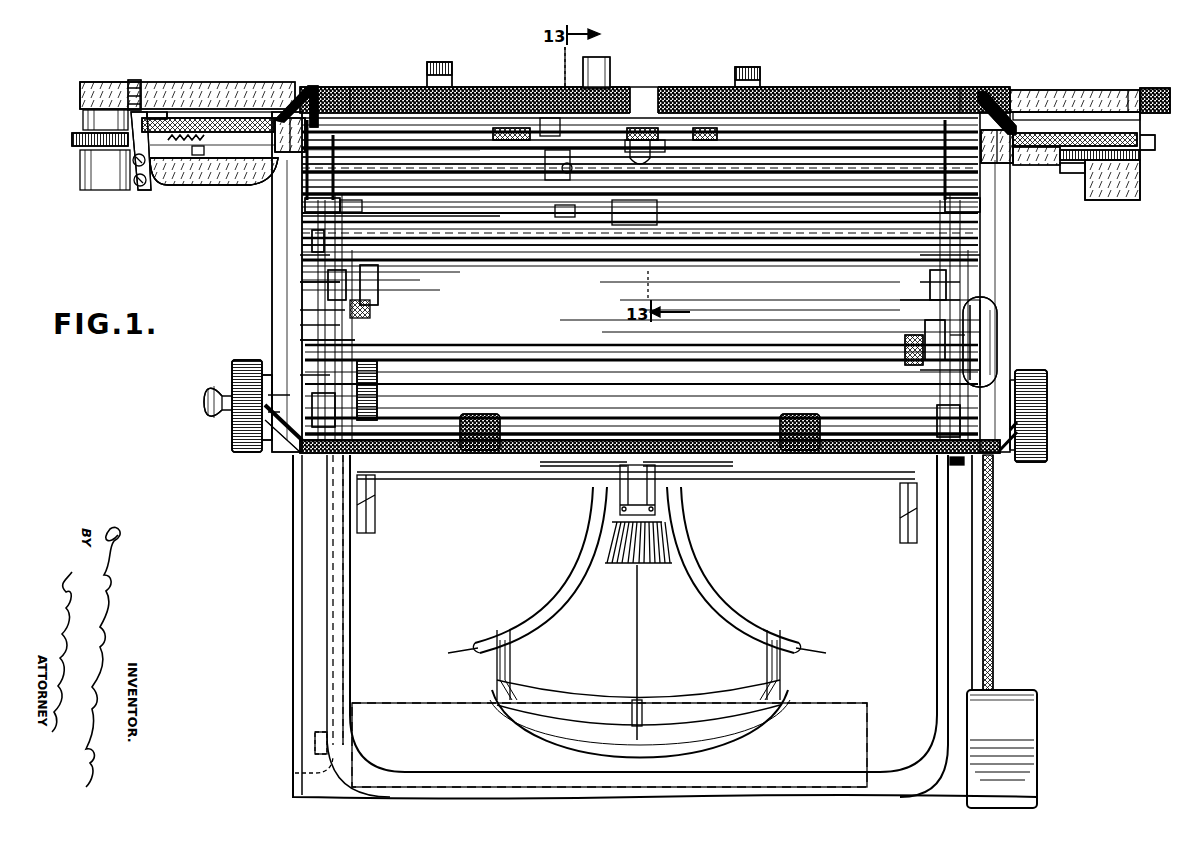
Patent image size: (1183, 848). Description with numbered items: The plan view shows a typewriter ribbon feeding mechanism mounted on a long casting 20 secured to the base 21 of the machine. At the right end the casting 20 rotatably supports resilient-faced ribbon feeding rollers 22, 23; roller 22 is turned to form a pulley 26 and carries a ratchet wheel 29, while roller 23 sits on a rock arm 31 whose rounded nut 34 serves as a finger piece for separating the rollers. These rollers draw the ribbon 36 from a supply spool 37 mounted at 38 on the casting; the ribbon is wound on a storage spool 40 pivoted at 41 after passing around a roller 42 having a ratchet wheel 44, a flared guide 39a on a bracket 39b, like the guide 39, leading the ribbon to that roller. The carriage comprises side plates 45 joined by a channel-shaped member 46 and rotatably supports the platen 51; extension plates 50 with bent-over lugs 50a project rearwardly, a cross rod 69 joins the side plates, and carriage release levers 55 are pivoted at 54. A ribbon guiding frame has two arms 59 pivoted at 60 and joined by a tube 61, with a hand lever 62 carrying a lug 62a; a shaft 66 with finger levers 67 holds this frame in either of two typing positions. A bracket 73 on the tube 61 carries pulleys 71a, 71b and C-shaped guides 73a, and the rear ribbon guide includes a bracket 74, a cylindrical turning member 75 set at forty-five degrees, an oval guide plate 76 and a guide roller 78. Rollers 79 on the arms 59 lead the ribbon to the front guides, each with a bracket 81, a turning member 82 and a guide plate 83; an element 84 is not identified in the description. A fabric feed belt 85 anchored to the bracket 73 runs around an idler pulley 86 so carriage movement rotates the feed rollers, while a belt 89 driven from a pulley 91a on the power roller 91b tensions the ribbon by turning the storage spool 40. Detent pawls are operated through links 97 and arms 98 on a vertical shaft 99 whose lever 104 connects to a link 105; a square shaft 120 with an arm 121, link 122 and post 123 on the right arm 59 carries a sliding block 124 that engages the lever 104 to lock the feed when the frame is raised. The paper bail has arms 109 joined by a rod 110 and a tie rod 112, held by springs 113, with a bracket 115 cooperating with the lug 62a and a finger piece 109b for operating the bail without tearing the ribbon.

The casting 20 is at (176, 178).
The base 21 is at (965, 568).
The ribbon feeding roller 22 is at (1080, 95).
The ribbon feeding roller 23 is at (1156, 95).
The pulley 26 is at (1122, 110).
The ratchet wheel 29 is at (1130, 170).
The rock arm 31 is at (1146, 142).
The nut 34 is at (1140, 158).
The ribbon 36 is at (487, 97).
The ribbon supply spool 37 is at (808, 90).
The spool mounting 38 is at (748, 67).
The guide 39 is at (1050, 123).
The guide 39a is at (134, 80).
The bracket 39b is at (136, 150).
The storage spool 40 is at (398, 88).
The pivot mounting 41 is at (438, 62).
The roller 42 is at (86, 84).
The ratchet wheel 44 is at (72, 140).
The side plates 45 is at (305, 280).
The channel-shaped member 46 is at (262, 375).
The extension plates 50 is at (333, 136).
The bent-over lugs 50a is at (308, 205).
The platen 51 is at (612, 397).
The pivot 54 is at (335, 340).
The carriage release levers 55 is at (338, 405).
The arms 59 is at (310, 325).
The pivots 60 is at (354, 87).
The tube 61 is at (832, 168).
The hand lever 62 is at (990, 340).
The bent-over lug 62a is at (990, 352).
The shaft 66 is at (526, 225).
The finger levers 67 is at (290, 256).
The cross rod 69 is at (768, 246).
The guide roller 71a is at (672, 88).
The guide roller 71b is at (612, 88).
The bracket 73 is at (675, 140).
The ribbon guides 73a is at (580, 86).
The bracket 74 is at (285, 128).
The cylindrical ribbon turning member 75 is at (298, 118).
The flat oval guide plate 76 is at (312, 86).
The guide roller 78 is at (272, 186).
The rollers 79 is at (262, 358).
The bracket 81 is at (300, 445).
The cylindrical turning member 82 is at (274, 432).
The guide plate 83 is at (240, 386).
The lower rail 84 is at (312, 452).
The feed belt 85 is at (228, 122).
The idler pulley 86 is at (168, 114).
The feed belt 89 is at (345, 577).
The pulley 91a is at (295, 773).
The power roller 91b is at (405, 703).
The links 97 is at (548, 118).
The arms 98 is at (600, 148).
The vertical shaft 99 is at (560, 172).
The lever 104 is at (556, 162).
The link 105 is at (556, 211).
The arms 109 is at (345, 345).
The finger piece 109b is at (920, 332).
The rod 110 is at (518, 432).
The tie rod 112 is at (646, 242).
The springs 113 is at (300, 292).
The bracket 115 is at (955, 336).
The square shaft 120 is at (830, 242).
The arm 121 is at (405, 215).
The link 122 is at (380, 157).
The post 123 is at (275, 150).
The block 124 is at (668, 208).